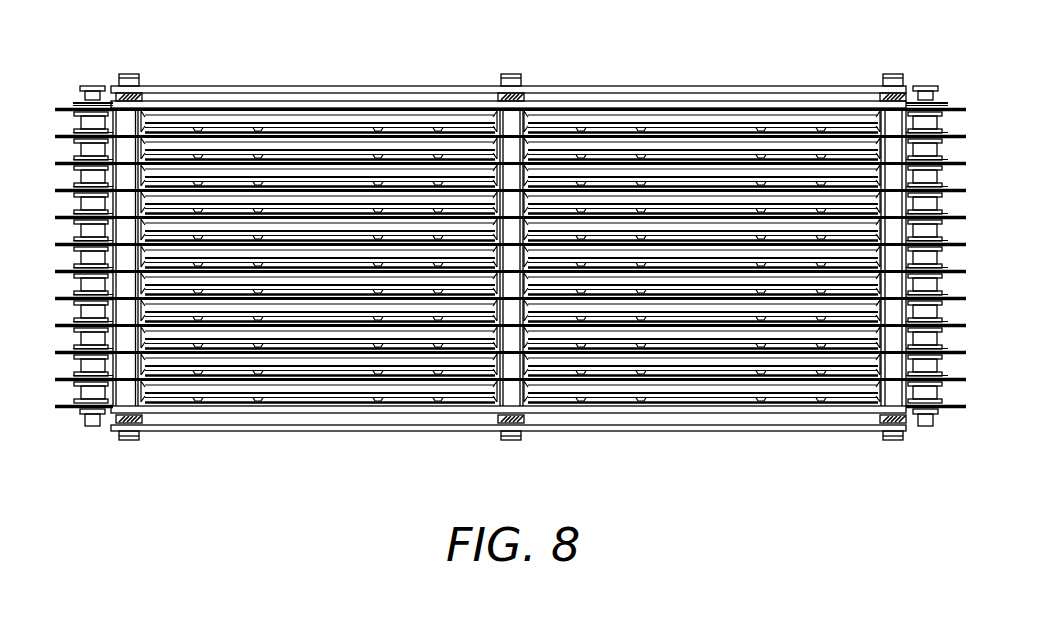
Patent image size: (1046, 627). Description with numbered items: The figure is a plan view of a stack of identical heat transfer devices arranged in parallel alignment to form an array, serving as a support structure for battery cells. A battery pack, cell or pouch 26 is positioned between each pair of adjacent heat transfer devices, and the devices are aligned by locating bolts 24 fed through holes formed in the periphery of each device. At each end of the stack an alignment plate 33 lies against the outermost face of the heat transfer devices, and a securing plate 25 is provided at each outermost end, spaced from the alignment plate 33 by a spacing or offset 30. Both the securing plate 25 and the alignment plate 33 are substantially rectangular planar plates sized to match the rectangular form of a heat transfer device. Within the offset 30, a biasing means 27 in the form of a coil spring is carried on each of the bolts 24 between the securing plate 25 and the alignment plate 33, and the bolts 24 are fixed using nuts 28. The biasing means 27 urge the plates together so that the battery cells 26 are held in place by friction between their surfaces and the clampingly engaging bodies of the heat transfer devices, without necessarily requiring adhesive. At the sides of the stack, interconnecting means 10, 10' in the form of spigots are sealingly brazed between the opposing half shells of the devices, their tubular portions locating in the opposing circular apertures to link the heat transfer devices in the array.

The interconnecting means 10 is at (84, 288).
The interconnecting means 10' is at (936, 288).
The locating bolt 24 is at (121, 64).
The securing plate 25 is at (637, 78).
The battery cell 26 is at (670, 383).
The biasing means 27 is at (122, 92).
The nut 28 is at (120, 434).
The spacing 30 is at (318, 78).
The alignment plate 33 is at (749, 98).